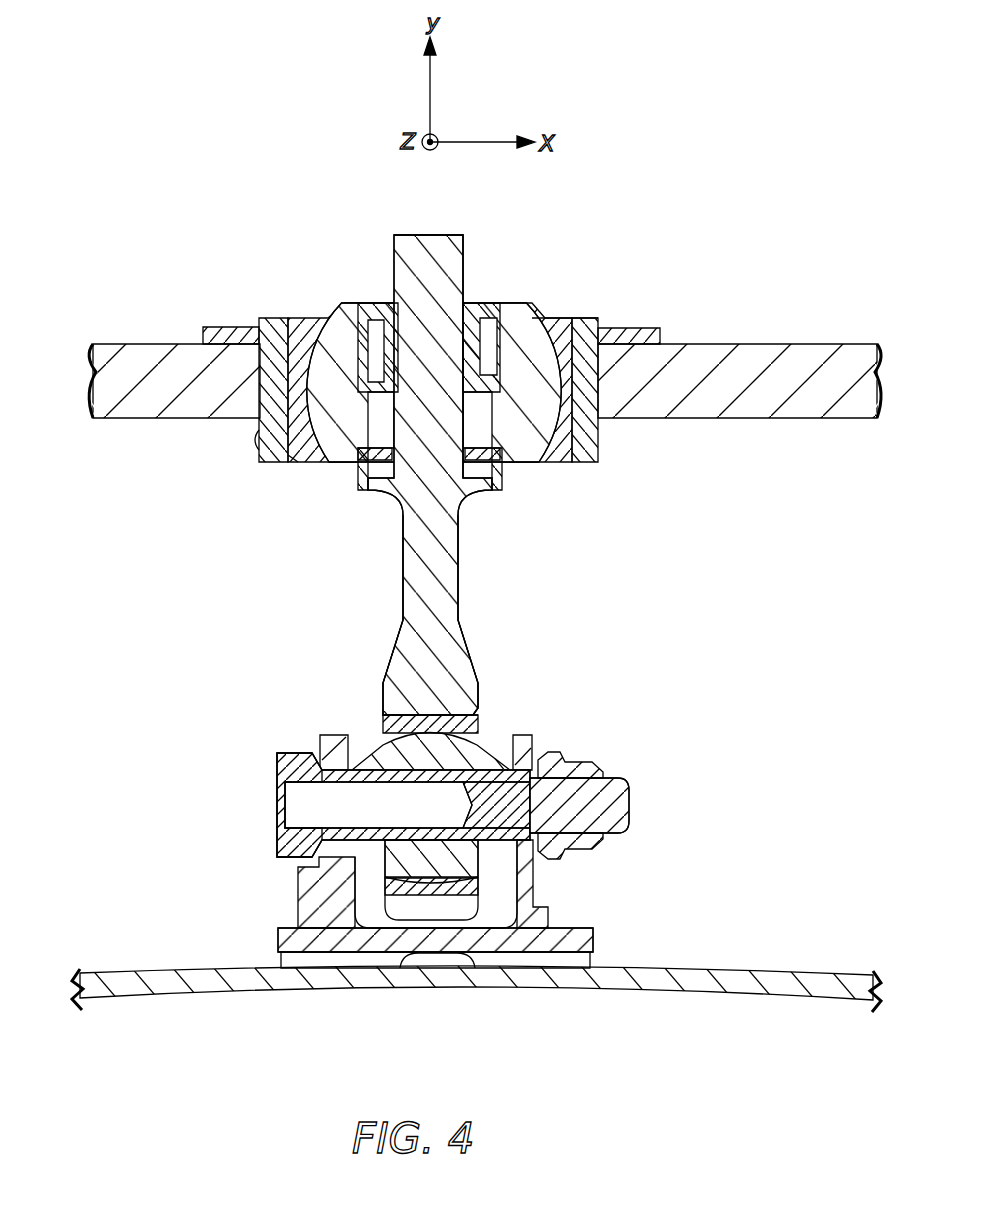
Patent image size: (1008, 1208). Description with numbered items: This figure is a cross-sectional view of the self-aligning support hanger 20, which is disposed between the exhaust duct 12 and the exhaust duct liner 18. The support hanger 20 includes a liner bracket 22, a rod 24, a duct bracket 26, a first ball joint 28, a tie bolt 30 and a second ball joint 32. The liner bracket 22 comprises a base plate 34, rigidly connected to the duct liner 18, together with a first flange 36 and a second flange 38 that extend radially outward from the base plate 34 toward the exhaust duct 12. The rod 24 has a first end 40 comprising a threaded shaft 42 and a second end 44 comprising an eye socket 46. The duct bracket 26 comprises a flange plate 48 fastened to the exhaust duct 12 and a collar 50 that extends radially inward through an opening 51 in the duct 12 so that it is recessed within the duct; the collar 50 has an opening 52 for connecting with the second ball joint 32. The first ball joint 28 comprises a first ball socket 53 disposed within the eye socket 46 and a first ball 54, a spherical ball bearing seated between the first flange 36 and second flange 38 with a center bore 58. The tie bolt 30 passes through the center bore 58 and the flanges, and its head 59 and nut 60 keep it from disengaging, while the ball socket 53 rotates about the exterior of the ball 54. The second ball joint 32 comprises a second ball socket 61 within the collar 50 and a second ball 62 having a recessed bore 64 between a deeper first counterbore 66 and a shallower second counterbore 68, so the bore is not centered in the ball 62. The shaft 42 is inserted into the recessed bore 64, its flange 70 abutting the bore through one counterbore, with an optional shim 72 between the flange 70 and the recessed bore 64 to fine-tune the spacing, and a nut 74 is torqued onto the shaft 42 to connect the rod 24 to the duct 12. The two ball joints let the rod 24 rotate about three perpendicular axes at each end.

The exhaust duct 12 is at (840, 344).
The exhaust duct liner 18 is at (758, 972).
The self-aligning support hanger 20 is at (455, 212).
The liner bracket 22 is at (258, 927).
The rod 24 is at (458, 583).
The duct bracket 26 is at (612, 312).
The first ball joint 28 is at (500, 680).
The tie bolt 30 is at (593, 802).
The second ball joint 32 is at (540, 298).
The base plate 34 is at (598, 940).
The first flange 36 is at (534, 893).
The second flange 38 is at (333, 903).
The first end 40 is at (352, 502).
The threaded shaft 42 is at (464, 258).
The second end 44 is at (363, 672).
The eye socket 46 is at (383, 700).
The flange plate 48 is at (228, 328).
The collar 50 is at (272, 367).
The opening 51 is at (262, 427).
The opening 52 is at (293, 462).
The first ball socket 53 is at (487, 724).
The first ball 54 is at (415, 748).
The center bore 58 is at (488, 758).
The head 59 is at (290, 766).
The nut 60 is at (597, 840).
The second ball socket 61 is at (552, 462).
The second ball 62 is at (338, 318).
The recessed bore 64 is at (365, 455).
The first counterbore 66 is at (370, 303).
The second counterbore 68 is at (485, 465).
The flange 70 is at (375, 482).
The shim 72 is at (530, 457).
The nut 74 is at (470, 318).